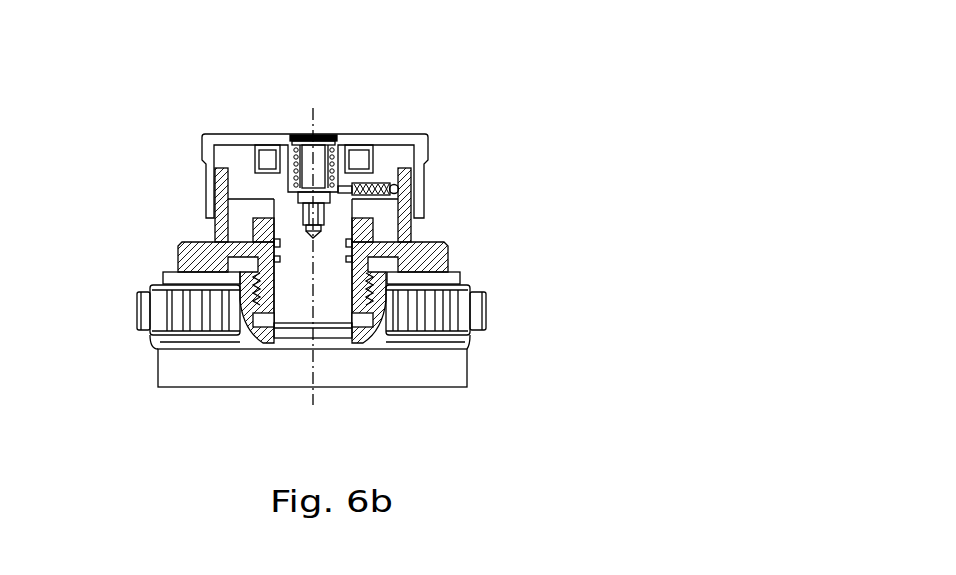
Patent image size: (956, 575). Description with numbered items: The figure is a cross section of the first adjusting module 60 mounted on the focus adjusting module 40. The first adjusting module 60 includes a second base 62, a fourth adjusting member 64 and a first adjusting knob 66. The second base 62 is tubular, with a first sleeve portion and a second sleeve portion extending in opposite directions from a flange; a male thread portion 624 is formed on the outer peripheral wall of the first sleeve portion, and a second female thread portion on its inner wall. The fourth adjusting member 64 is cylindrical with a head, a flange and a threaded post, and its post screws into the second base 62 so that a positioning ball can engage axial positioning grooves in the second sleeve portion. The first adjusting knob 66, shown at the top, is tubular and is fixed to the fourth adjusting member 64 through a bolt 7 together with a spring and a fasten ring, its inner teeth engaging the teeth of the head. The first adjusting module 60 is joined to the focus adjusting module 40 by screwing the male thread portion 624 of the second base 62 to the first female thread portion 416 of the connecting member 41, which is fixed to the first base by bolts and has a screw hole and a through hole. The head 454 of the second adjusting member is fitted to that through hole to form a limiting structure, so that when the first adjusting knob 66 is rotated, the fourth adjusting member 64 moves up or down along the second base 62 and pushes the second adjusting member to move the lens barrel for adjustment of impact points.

The first adjusting module 60 is at (319, 221).
The first adjusting knob 66 is at (424, 138).
The bolt 7 is at (320, 160).
The fourth adjusting member 64 is at (327, 213).
The second base 62 is at (440, 257).
The male thread portion 624 is at (270, 277).
The first female thread portion 416 is at (253, 297).
The head 454 is at (327, 333).
The connecting member 41 is at (382, 320).
The focus adjusting module 40 is at (409, 347).